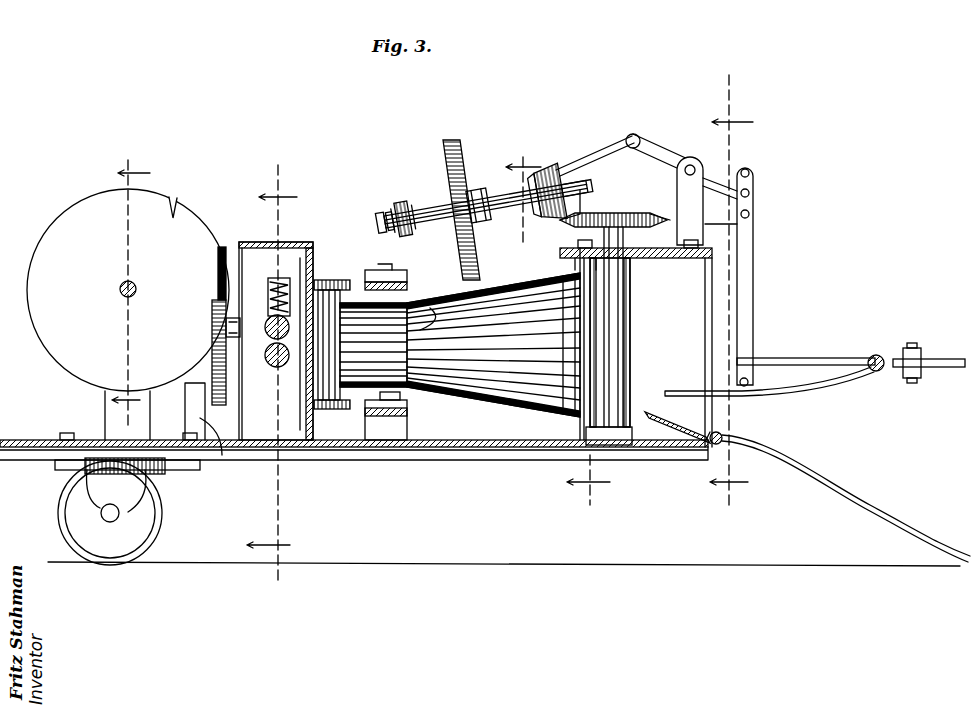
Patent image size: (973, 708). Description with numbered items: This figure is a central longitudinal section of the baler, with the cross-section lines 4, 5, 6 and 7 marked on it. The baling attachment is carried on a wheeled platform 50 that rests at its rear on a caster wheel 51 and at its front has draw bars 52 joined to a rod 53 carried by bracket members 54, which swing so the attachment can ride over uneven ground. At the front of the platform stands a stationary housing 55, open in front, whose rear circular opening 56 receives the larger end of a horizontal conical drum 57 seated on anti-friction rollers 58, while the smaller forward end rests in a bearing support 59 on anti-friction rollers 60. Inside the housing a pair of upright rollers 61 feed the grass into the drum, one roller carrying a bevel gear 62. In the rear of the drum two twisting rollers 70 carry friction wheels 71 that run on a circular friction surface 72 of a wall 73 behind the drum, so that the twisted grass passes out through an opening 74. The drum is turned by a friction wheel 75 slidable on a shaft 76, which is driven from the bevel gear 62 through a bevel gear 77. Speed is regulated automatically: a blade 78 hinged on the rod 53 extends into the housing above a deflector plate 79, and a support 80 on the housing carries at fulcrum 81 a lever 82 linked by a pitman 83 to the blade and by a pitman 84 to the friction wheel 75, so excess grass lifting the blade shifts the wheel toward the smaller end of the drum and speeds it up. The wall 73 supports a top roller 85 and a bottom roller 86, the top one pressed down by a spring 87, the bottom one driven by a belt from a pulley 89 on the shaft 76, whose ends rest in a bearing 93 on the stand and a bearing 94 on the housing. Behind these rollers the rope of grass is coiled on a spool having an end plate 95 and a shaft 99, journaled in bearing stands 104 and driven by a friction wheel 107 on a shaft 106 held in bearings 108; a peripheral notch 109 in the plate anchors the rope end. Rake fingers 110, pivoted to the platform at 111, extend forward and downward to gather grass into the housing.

The section line 4— 4 is at (731, 301).
The section line 5— 5 is at (558, 330).
The section line 6— 6 is at (272, 377).
The section line 7— 7 is at (131, 286).
The wheeled platform 50 is at (458, 447).
The caster wheel 51 is at (150, 521).
The draw bars 52 is at (778, 357).
The rod 53 is at (878, 356).
The bracket members 54 is at (938, 357).
The housing 55 is at (636, 347).
The circular opening 56 is at (588, 330).
The conical drum 57 is at (506, 283).
The anti-friction rollers 58 is at (565, 385).
The bearing support 59 is at (398, 412).
The anti-friction rollers 60 is at (402, 372).
The upright rollers 61 is at (616, 366).
The bevel gear 62 is at (626, 212).
The twisting rollers 70 is at (345, 352).
The friction wheels 71 is at (340, 282).
The circular friction surface 72 is at (330, 410).
The wall 73 is at (306, 414).
The opening 74 is at (305, 350).
The friction wheel 75 is at (458, 138).
The shaft 76 is at (425, 210).
The bevel gear 77 is at (555, 170).
The blade 78 is at (838, 386).
The deflector plate 79 is at (678, 430).
The support 80 is at (705, 224).
The fulcrum 81 is at (689, 162).
The lever 82 is at (715, 180).
The pitman 83 is at (753, 266).
The pitman 84 is at (602, 150).
The top roller 85 is at (267, 323).
The bottom roller 86 is at (270, 364).
The spring 87 is at (272, 283).
The pulley 89 is at (404, 205).
The bearing 93 is at (390, 214).
The bearing 94 is at (590, 196).
The end plate 95 is at (128, 290).
The shaft 99 is at (136, 288).
The bearing stands 104 is at (112, 418).
The shaft 106 is at (226, 332).
The friction wheel 107 is at (218, 372).
The bearings 108 is at (220, 450).
The peripheral notch 109 is at (178, 203).
The rake fingers 110 is at (905, 521).
The pivot 111 is at (722, 437).